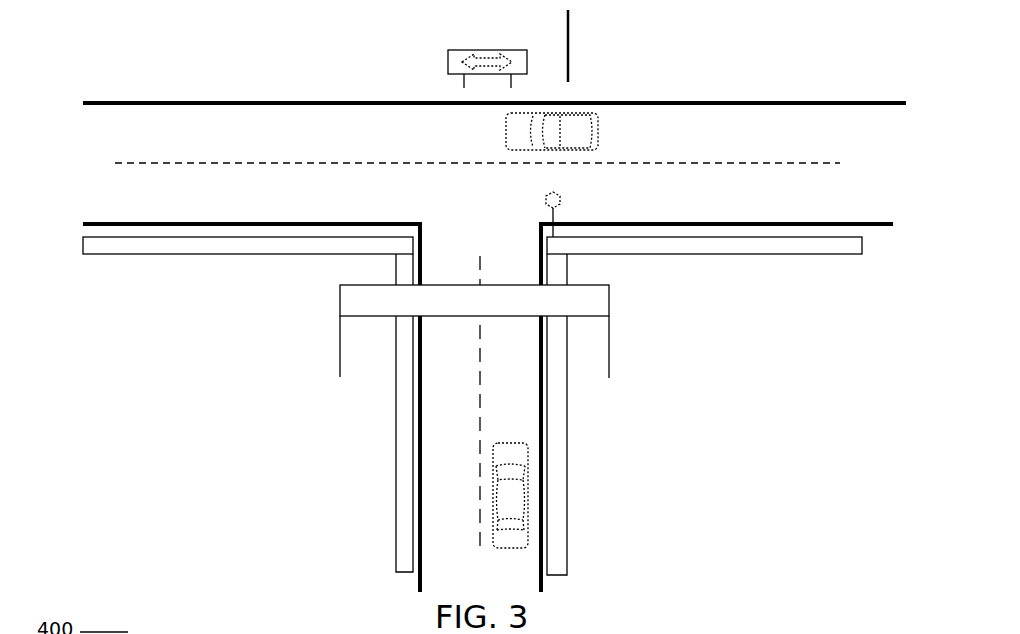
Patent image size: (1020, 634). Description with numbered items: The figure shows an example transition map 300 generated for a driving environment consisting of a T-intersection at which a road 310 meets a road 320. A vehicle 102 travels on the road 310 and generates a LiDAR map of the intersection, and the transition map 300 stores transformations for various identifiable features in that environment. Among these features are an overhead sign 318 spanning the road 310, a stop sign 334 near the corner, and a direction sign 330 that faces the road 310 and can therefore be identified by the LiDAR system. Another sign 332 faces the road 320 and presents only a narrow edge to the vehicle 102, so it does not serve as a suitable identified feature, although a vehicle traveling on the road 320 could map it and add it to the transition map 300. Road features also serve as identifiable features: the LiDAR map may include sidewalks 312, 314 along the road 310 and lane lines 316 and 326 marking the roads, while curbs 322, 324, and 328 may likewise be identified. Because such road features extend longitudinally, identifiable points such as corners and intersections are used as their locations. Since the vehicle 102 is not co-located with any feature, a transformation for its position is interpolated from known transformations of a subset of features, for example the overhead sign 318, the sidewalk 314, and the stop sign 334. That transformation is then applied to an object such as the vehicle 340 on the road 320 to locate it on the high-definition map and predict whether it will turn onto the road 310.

The transition map 300 is at (160, 38).
The road 320 is at (150, 157).
The curb 328 is at (373, 100).
The lane line 326 is at (385, 160).
The curb 322 is at (260, 222).
The curb 324 is at (690, 222).
The sidewalk 314 is at (396, 440).
The sidewalk 312 is at (567, 455).
The road 310 is at (442, 515).
The lane line 316 is at (480, 420).
The overhead sign 318 is at (340, 300).
The stop sign 334 is at (546, 193).
The direction sign 330 is at (485, 50).
The sign 332 is at (566, 40).
The vehicle 340 is at (600, 138).
The vehicle 102 is at (515, 505).